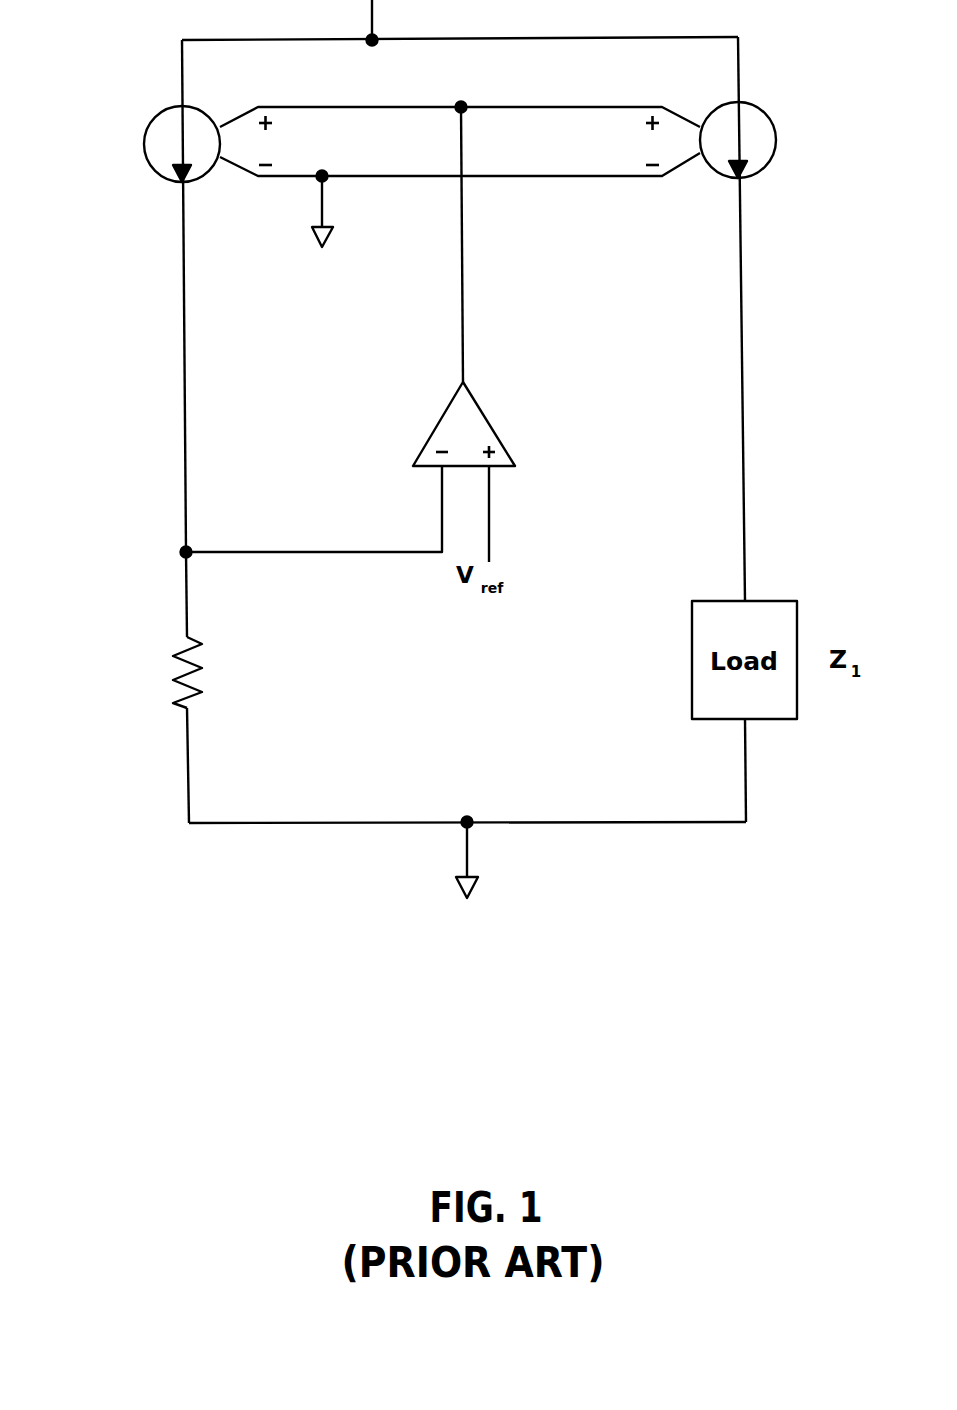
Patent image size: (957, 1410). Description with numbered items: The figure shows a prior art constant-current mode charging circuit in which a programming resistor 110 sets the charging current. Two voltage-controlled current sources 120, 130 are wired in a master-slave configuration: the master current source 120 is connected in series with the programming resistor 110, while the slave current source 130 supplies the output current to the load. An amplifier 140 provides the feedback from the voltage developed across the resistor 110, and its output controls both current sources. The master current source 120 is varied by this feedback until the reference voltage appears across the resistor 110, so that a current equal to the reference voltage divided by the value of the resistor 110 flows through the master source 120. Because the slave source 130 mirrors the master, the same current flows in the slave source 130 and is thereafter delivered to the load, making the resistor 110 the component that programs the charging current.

The programming resistor 110 is at (170, 670).
The master current source 120 is at (157, 175).
The slave current source 130 is at (767, 165).
The amplifier 140 is at (490, 420).